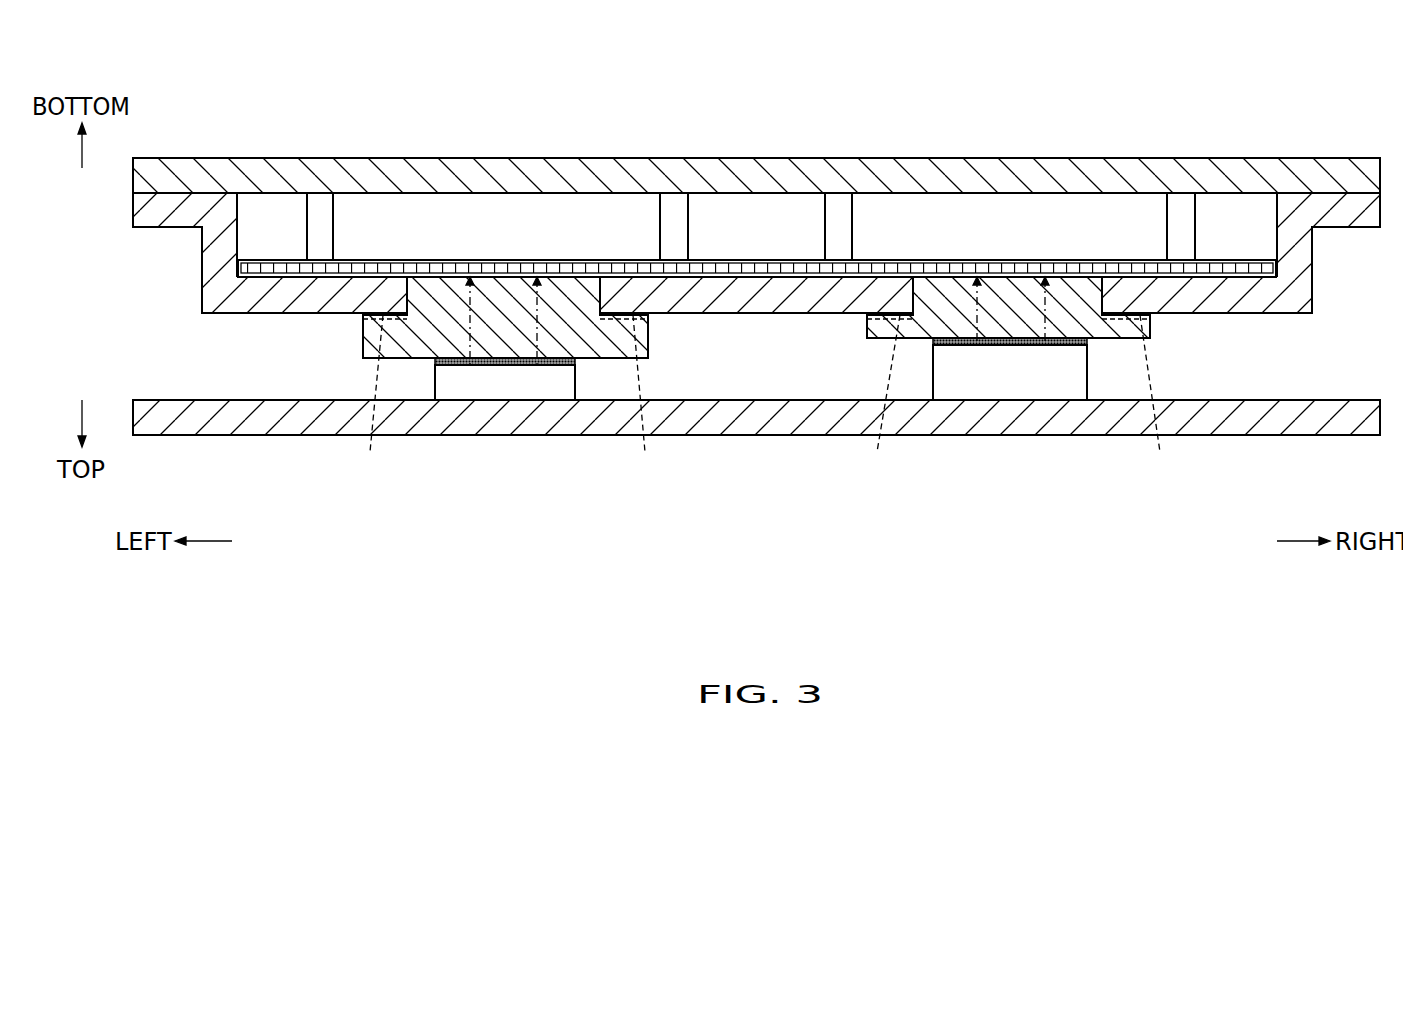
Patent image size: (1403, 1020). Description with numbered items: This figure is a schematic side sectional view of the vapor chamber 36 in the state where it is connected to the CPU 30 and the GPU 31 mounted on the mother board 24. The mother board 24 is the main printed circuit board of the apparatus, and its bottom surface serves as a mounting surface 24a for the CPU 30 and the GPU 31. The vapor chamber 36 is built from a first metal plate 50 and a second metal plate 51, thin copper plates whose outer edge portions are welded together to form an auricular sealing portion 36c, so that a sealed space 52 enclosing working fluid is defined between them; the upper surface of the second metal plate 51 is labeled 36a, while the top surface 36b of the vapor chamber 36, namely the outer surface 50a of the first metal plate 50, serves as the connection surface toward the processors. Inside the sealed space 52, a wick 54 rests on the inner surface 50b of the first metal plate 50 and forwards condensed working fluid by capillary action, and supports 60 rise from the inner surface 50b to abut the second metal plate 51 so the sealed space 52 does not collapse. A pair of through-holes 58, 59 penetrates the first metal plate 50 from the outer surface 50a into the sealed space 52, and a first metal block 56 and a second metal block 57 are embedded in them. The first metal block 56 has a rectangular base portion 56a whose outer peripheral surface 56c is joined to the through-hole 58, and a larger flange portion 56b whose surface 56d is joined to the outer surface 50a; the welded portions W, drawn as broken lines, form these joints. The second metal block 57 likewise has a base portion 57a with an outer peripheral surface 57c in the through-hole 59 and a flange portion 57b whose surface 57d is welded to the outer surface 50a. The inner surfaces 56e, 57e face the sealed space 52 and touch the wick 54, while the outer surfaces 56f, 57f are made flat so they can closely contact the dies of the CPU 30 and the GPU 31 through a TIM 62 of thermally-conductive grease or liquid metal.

The vapor chamber 36 is at (183, 67).
The upper surface of case top plate 36a is at (773, 158).
The top surface of the vapor chamber 36b is at (1215, 313).
The auricular sealing portion 36c is at (133, 204).
The second metal plate 51 is at (258, 158).
The sealed space 52 is at (765, 166).
The support 60 is at (333, 237).
The first metal plate 50 is at (276, 315).
The outer surface of the first metal plate 50a is at (745, 411).
The inner surface of the first metal plate 50b is at (726, 266).
The wick 54 is at (876, 258).
The through-hole 58 is at (410, 293).
The first metal block 56 is at (420, 358).
The base portion 56a is at (498, 293).
The flange portion 56b is at (601, 342).
The outer peripheral surface 56c is at (597, 292).
The surface of the flange portion 56d is at (372, 306).
The inner surface 56e is at (572, 285).
The outer surface 56f is at (488, 360).
The CPU 30 is at (502, 392).
The through-hole 59 is at (914, 292).
The second metal block 57 is at (908, 342).
The base portion 57a is at (998, 293).
The flange portion 57b is at (1107, 327).
The outer peripheral surface 57c is at (1106, 298).
The surface of the flange portion 57d is at (878, 318).
The inner surface 57e is at (1033, 262).
The outer surface 57f is at (1008, 346).
The GPU 31 is at (1020, 372).
The TIM 62 is at (553, 366).
The welded portion W is at (768, 399).
The mother board 24 is at (705, 437).
The mounting surface 24a is at (810, 411).